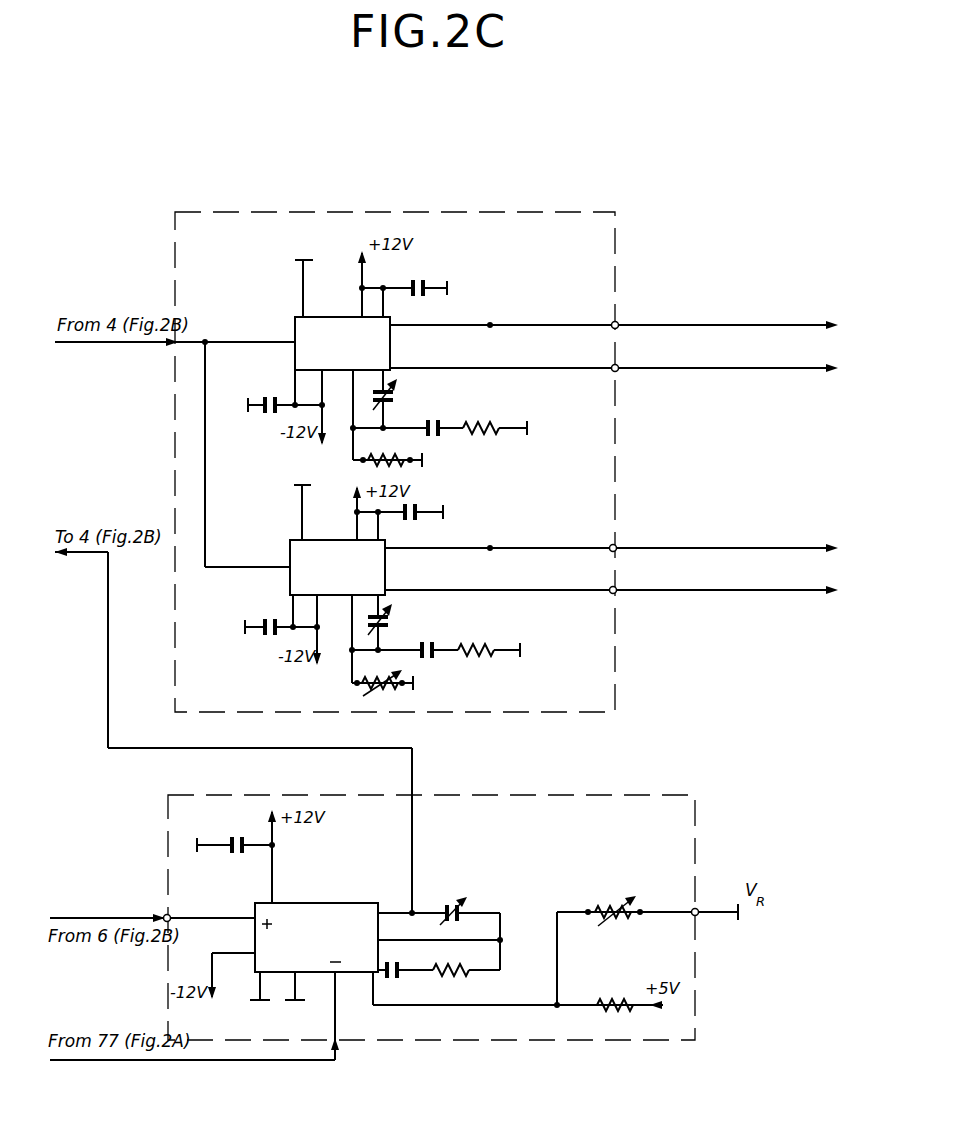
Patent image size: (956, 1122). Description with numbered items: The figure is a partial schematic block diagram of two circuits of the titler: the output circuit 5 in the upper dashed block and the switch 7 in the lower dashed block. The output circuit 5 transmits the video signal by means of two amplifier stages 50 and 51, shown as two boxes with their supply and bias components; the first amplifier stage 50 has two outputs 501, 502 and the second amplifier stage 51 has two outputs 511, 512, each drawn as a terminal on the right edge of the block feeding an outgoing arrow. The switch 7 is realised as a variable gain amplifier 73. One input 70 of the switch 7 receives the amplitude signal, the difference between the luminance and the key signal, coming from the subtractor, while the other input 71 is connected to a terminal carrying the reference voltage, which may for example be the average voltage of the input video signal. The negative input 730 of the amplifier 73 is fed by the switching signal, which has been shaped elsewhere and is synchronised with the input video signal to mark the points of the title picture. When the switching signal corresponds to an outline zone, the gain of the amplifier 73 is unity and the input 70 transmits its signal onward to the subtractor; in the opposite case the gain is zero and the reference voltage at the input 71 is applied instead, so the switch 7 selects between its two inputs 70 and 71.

The output circuit 5 is at (478, 220).
The amplifier stage 50 is at (364, 350).
The output 501 is at (617, 322).
The output 502 is at (617, 366).
The amplifier stage 51 is at (357, 578).
The output 511 is at (615, 546).
The output 512 is at (615, 588).
The switch 7 is at (645, 798).
The input 70 is at (164, 914).
The input 71 is at (697, 910).
The variable gain amplifier 73 is at (288, 945).
The negative input 730 is at (339, 974).